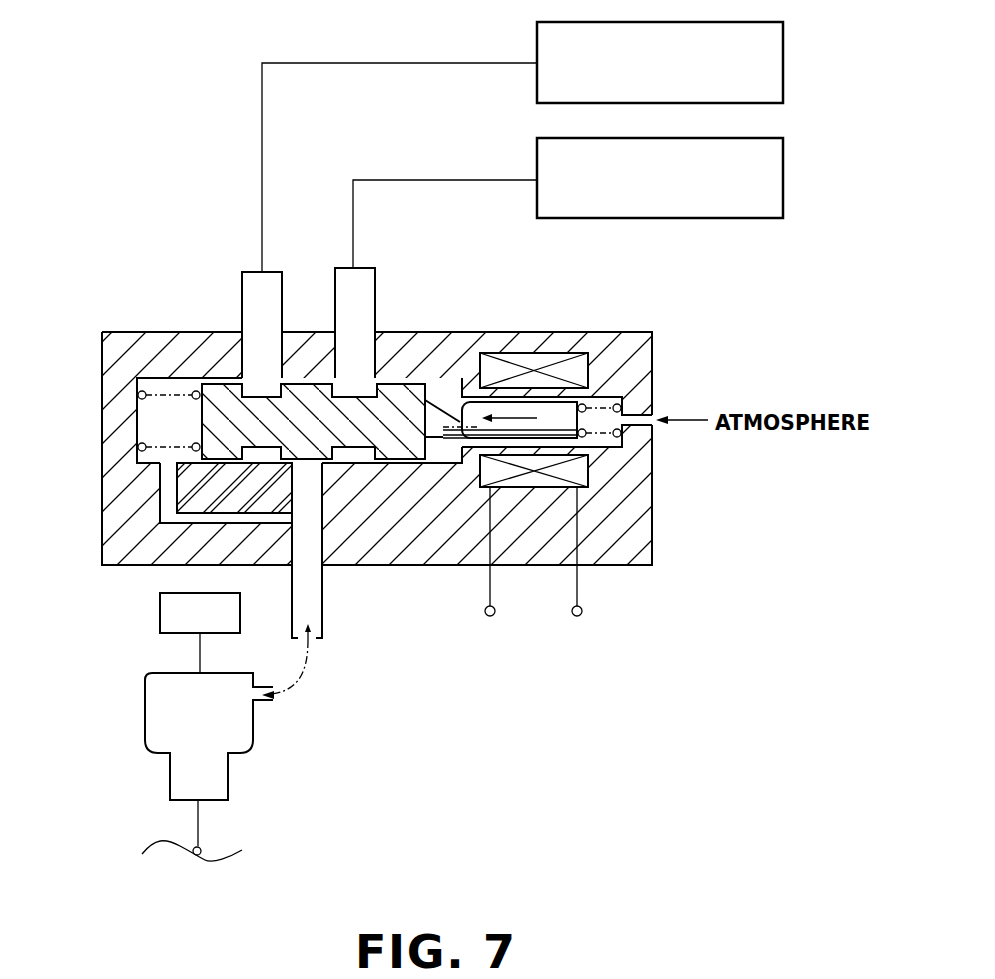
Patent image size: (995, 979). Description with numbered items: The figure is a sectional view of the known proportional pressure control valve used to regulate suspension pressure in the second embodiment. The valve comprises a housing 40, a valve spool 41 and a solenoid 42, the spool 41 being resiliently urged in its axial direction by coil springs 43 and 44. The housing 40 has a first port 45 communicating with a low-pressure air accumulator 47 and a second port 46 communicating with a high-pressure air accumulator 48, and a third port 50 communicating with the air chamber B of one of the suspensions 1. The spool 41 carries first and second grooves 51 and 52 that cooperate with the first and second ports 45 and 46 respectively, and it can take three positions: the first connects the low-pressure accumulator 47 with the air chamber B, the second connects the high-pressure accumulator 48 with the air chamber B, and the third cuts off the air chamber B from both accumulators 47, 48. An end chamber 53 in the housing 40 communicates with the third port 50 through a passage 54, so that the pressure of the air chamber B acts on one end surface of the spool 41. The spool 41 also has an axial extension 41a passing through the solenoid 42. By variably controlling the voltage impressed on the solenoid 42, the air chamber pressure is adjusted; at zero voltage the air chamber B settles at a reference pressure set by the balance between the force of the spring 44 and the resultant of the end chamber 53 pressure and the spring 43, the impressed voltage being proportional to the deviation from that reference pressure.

The suspension 1 is at (177, 775).
The housing 40 is at (417, 553).
The valve spool 41 is at (453, 350).
The axial extension 41a is at (587, 416).
The solenoid 42 is at (540, 357).
The coil spring 43 is at (140, 431).
The coil spring 44 is at (613, 393).
The first port 45 is at (255, 288).
The second port 46 is at (362, 285).
The low-pressure air accumulator 47 is at (783, 63).
The high-pressure air accumulator 48 is at (783, 180).
The third port 50 is at (308, 580).
The first groove 51 is at (260, 348).
The second groove 52 is at (362, 345).
The end chamber 53 is at (160, 420).
The passage 54 is at (167, 502).
The air chamber B is at (160, 615).